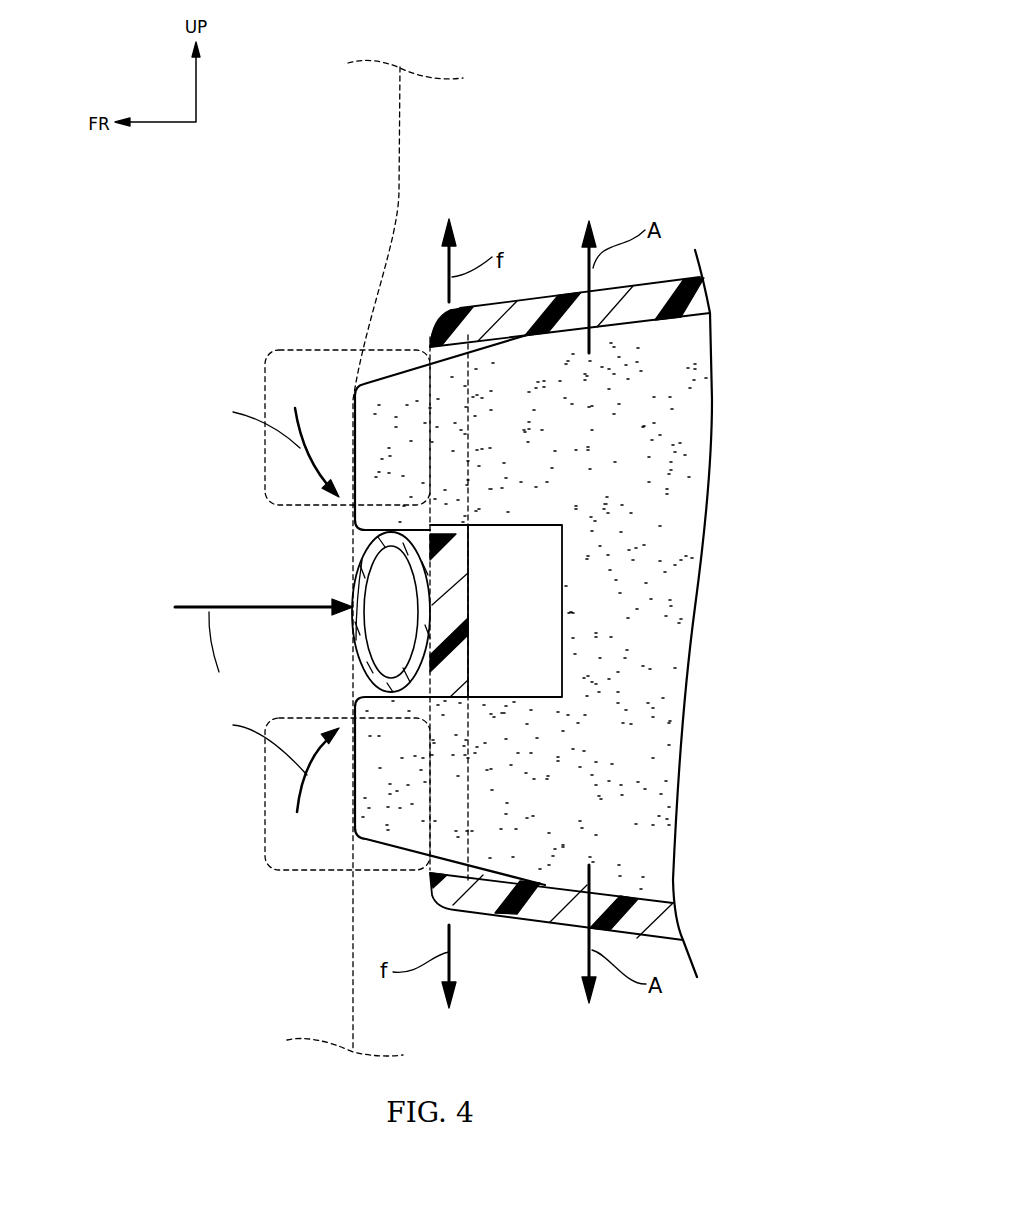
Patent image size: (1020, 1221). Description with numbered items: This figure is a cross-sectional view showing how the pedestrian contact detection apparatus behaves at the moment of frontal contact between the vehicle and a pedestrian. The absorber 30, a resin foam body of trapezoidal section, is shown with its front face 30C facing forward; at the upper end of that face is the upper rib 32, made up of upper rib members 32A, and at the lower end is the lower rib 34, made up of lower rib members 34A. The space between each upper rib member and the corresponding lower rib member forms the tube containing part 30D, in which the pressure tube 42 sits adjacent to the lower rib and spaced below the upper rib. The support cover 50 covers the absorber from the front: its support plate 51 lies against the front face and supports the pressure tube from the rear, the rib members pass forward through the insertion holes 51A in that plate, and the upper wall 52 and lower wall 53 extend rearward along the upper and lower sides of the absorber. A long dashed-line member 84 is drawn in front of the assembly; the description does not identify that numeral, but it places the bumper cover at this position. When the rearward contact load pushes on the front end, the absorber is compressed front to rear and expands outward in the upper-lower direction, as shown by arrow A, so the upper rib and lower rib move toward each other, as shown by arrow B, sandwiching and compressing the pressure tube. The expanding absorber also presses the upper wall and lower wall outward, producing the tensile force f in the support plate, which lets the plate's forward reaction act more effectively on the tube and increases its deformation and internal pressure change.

The absorber 30 is at (438, 586).
The front face 30C is at (562, 593).
The tube containing part 30D is at (352, 540).
The upper rib 32 is at (265, 457).
The upper rib member 32A is at (352, 411).
The lower rib 34 is at (265, 782).
The lower rib member 34A is at (354, 801).
The pressure tube 42 is at (350, 598).
The support cover 50 is at (668, 277).
The support plate 51 is at (378, 677).
The insertion hole 51A is at (430, 350).
The upper wall 52 is at (570, 255).
The lower wall 53 is at (521, 922).
The panel 84 is at (403, 152).